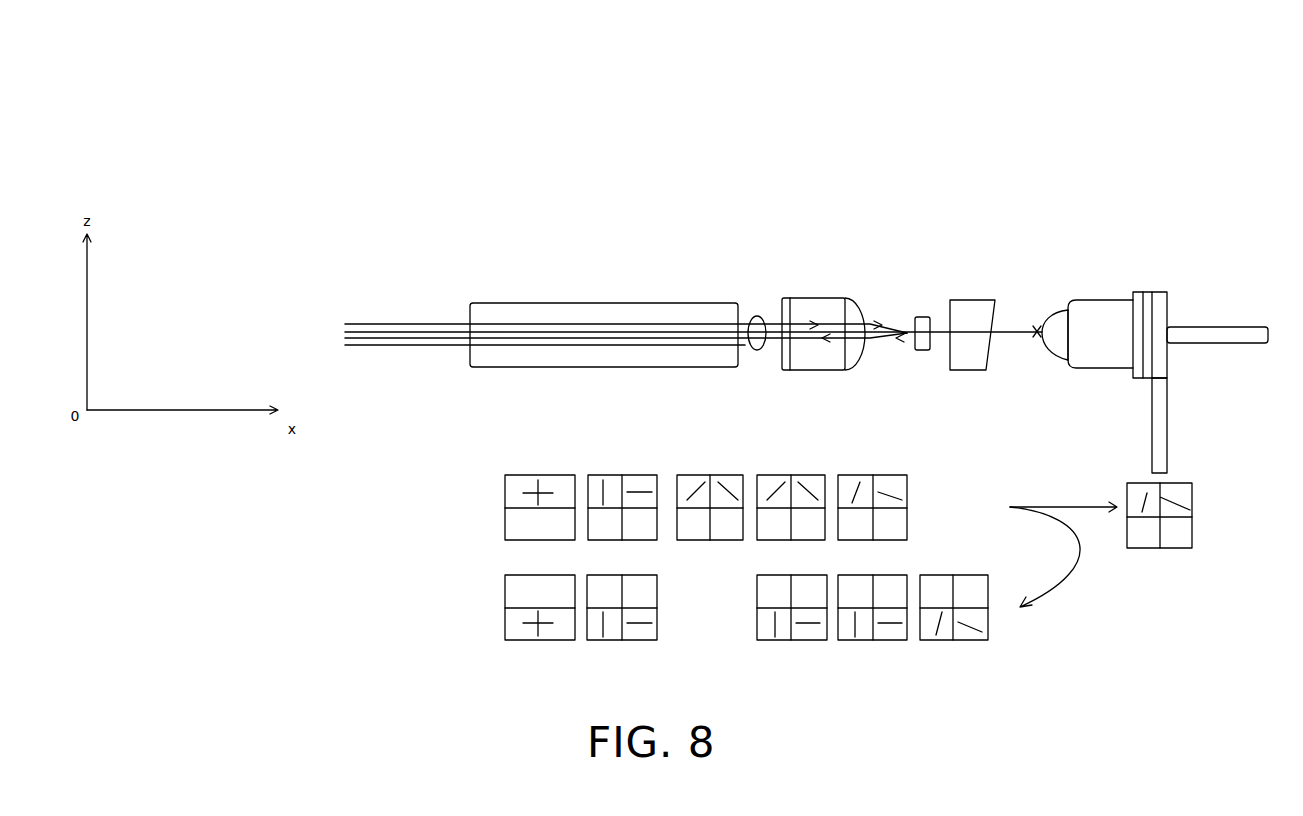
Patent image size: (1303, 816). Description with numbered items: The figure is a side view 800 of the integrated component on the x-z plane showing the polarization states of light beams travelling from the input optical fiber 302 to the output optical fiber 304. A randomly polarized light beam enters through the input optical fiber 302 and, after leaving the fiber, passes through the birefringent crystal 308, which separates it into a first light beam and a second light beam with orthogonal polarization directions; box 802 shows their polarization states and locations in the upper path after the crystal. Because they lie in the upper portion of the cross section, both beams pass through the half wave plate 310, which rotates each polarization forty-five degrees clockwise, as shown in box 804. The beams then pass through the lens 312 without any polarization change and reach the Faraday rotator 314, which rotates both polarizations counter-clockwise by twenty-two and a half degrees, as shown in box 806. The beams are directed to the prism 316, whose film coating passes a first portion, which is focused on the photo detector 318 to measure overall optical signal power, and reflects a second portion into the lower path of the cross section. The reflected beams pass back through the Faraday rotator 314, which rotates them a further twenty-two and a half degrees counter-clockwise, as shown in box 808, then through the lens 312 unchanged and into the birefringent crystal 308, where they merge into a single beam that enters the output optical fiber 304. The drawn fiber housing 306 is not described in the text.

The side view 800 is at (225, 74).
The box 802 is at (626, 469).
The box 804 is at (711, 469).
The box 806 is at (876, 469).
The box 808 is at (864, 651).
The input optical fiber 302 is at (506, 328).
The output optical fiber 304 is at (508, 345).
The optical fiber 306 is at (623, 355).
The birefringent crystal 308 is at (743, 353).
The half wave plate 310 is at (773, 323).
The lens 312 is at (818, 357).
The Faraday rotator 314 is at (922, 347).
The prism 316 is at (990, 330).
The photo detector 318 is at (1090, 348).